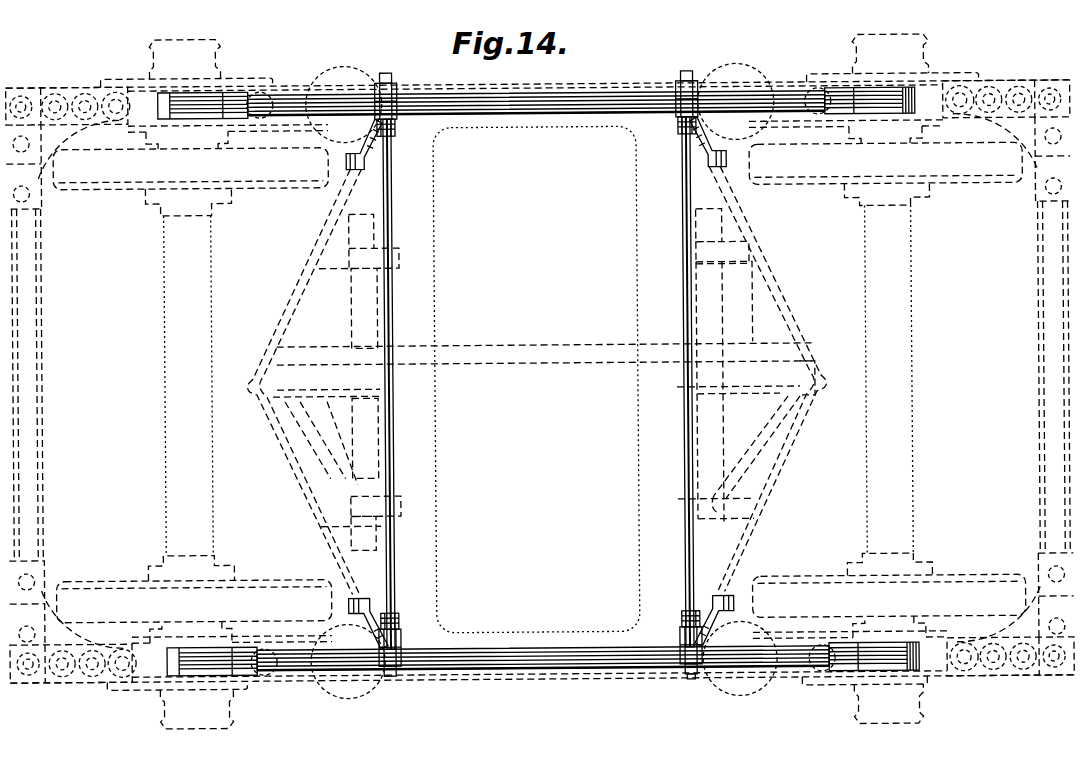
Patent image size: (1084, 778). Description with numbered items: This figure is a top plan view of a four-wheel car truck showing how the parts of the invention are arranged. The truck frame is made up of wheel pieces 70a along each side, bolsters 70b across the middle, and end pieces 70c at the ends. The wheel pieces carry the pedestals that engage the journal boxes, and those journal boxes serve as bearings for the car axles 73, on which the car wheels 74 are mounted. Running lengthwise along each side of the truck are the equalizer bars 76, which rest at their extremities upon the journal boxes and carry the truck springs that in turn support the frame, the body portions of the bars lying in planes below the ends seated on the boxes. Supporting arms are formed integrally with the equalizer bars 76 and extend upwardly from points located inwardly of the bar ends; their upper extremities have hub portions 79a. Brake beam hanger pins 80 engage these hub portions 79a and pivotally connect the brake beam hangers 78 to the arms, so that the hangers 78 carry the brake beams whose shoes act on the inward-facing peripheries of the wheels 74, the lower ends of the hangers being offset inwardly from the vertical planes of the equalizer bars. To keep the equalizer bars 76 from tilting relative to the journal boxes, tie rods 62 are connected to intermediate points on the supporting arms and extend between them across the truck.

The tie rod 62 is at (683, 574).
The wheel piece 70a is at (565, 90).
The bolster 70b is at (622, 272).
The end piece 70c is at (1052, 305).
The car axle 73 is at (896, 450).
The car wheel 74 is at (990, 636).
The equalizer bar 76 is at (482, 658).
The brake beam hanger 78 is at (712, 155).
The hub portion 79a is at (683, 664).
The brake beam hanger pin 80 is at (690, 685).